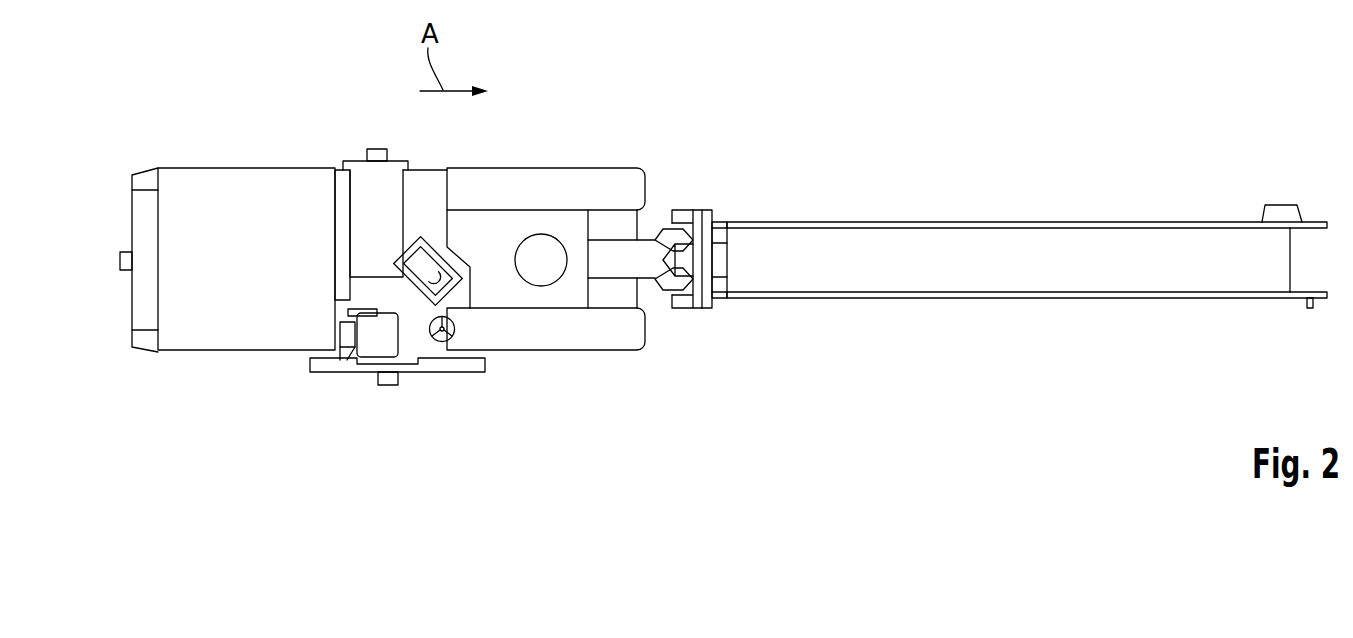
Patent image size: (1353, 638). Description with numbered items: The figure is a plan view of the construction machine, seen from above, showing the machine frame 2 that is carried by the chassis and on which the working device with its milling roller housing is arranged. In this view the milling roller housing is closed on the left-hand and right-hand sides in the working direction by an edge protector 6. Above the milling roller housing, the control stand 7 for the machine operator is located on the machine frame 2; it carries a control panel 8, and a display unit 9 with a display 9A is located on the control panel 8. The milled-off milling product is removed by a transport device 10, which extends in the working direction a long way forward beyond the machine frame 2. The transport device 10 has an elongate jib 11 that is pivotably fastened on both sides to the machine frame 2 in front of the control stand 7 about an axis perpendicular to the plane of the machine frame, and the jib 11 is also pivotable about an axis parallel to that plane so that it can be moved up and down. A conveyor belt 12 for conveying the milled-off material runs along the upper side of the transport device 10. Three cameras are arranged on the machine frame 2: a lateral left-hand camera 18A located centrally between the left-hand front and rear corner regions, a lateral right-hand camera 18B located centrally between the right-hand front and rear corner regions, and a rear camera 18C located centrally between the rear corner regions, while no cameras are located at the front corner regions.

The machine frame 2 is at (120, 214).
The edge protector 6 is at (334, 380).
The control stand 7 is at (457, 312).
The control panel 8 is at (412, 310).
The display unit 9 is at (421, 236).
The display 9A is at (460, 252).
The transport device 10 is at (994, 200).
The jib 11 is at (1130, 300).
The conveyor belt 12 is at (1135, 243).
The lateral left-hand camera 18A is at (380, 148).
The lateral right-hand camera 18B is at (385, 387).
The rear camera 18C is at (120, 262).